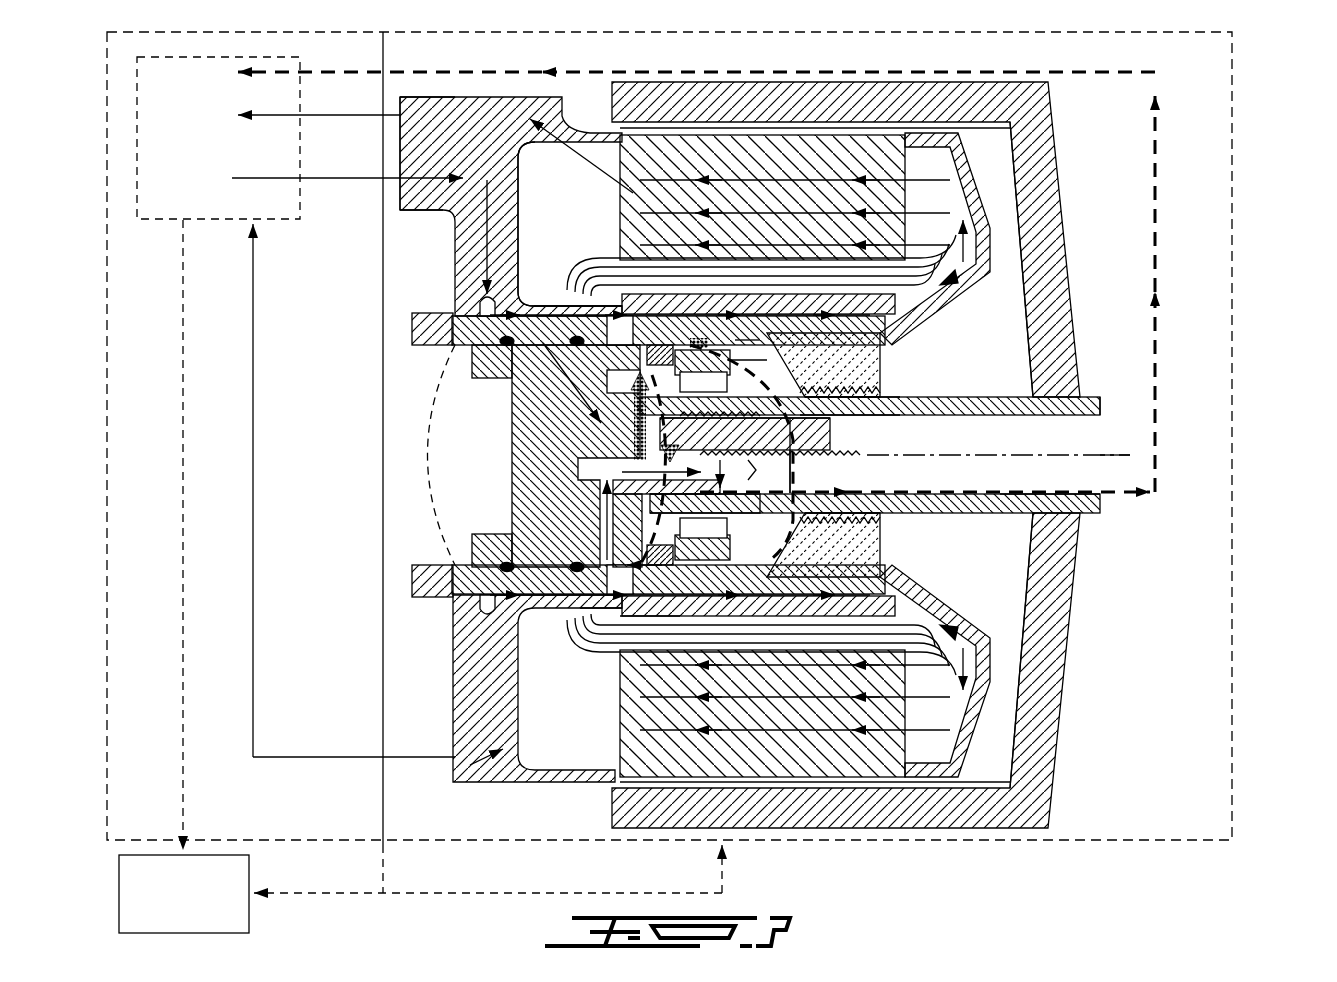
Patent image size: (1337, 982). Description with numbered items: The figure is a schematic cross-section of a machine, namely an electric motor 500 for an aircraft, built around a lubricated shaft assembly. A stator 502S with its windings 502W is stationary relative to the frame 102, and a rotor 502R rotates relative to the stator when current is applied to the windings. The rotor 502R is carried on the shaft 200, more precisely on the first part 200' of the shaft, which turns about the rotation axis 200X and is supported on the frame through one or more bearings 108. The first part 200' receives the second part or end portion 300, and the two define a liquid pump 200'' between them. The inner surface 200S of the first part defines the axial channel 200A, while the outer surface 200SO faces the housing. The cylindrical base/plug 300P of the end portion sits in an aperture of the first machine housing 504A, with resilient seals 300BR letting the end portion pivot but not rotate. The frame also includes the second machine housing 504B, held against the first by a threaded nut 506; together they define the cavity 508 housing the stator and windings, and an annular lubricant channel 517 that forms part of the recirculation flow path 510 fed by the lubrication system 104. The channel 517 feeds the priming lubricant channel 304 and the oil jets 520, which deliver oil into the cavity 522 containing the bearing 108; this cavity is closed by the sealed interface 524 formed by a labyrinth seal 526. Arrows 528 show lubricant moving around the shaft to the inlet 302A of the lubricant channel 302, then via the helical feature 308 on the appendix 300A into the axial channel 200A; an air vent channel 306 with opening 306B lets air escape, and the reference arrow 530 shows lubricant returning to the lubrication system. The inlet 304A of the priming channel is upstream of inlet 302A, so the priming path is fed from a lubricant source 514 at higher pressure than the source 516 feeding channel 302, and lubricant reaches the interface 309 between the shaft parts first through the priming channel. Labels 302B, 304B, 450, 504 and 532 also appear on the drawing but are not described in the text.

The frame 102 is at (1220, 63).
The lubrication system 104 is at (215, 165).
The bearing 108 is at (773, 455).
The shaft 200 is at (870, 437).
The first part of the shaft 200' is at (1118, 376).
The liquid pump 200'' is at (883, 434).
The axial channel 200A is at (1000, 490).
The inner surface 200S is at (1045, 489).
The outer surface 200SO is at (697, 338).
The rotation axis 200X is at (1116, 453).
The end portion 300 is at (493, 417).
The appendix 300A is at (805, 470).
The resilient seals 300BR is at (576, 562).
The cylindrical base/plug 300P is at (575, 470).
The lubricant channel 302 is at (590, 482).
The inlet of the lubricant channel 302A is at (600, 610).
The rotor portion end 302B is at (721, 521).
The priming lubricant channel 304 is at (512, 440).
The inlet to the priming lubricant channel 304A is at (512, 397).
The rotor portion end 304B is at (600, 450).
The air vent channel 306 is at (818, 446).
The opening 306B is at (700, 428).
The helical feature 308 is at (805, 362).
The interface 309 is at (870, 410).
The control system 450 is at (165, 808).
The electric motor 500 is at (1234, 90).
The rotor 502R is at (1040, 233).
The stator 502S is at (822, 178).
The windings 502W is at (588, 258).
The housing end cap 504 is at (446, 70).
The first machine housing 504A is at (968, 290).
The second machine housing 504B is at (455, 258).
The threaded nut 506 is at (420, 325).
The cavity 508 is at (566, 196).
The recirculation flow path 510 is at (343, 113).
The lubricant source 514 is at (535, 302).
The lubricant source 516 is at (650, 617).
The annular lubricant channel 517 is at (750, 320).
The oil jets 520 is at (648, 370).
The cavity 522 is at (735, 340).
The sealed interface 524 is at (887, 395).
The labyrinth seal 526 is at (884, 521).
The arrows 528 is at (800, 558).
The reference arrow 530 is at (1160, 327).
The pump 532 is at (208, 912).